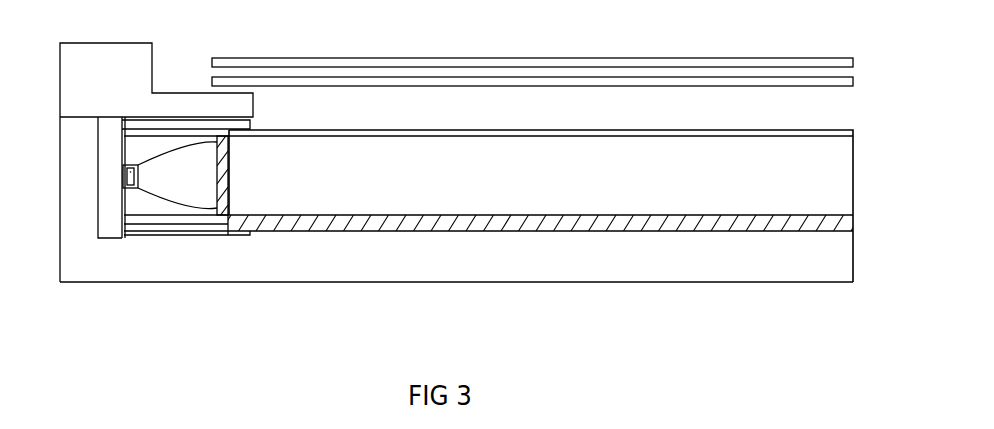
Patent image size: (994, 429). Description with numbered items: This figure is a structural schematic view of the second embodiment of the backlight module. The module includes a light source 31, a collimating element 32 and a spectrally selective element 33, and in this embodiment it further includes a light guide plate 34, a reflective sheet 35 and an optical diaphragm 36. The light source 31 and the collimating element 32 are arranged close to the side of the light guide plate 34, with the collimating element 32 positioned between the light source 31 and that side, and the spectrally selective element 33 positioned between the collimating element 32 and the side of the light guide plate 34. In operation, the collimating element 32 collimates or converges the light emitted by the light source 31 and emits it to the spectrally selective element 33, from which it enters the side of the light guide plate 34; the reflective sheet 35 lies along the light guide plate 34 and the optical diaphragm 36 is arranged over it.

The light source 31 is at (130, 178).
The collimating element 32 is at (200, 210).
The spectrally selective element 33 is at (222, 142).
The light guide plate 34 is at (333, 183).
The reflective sheet 35 is at (615, 220).
The optical diaphragm 36 is at (575, 58).